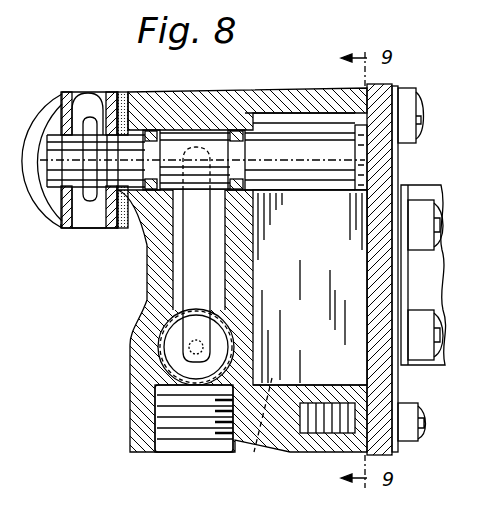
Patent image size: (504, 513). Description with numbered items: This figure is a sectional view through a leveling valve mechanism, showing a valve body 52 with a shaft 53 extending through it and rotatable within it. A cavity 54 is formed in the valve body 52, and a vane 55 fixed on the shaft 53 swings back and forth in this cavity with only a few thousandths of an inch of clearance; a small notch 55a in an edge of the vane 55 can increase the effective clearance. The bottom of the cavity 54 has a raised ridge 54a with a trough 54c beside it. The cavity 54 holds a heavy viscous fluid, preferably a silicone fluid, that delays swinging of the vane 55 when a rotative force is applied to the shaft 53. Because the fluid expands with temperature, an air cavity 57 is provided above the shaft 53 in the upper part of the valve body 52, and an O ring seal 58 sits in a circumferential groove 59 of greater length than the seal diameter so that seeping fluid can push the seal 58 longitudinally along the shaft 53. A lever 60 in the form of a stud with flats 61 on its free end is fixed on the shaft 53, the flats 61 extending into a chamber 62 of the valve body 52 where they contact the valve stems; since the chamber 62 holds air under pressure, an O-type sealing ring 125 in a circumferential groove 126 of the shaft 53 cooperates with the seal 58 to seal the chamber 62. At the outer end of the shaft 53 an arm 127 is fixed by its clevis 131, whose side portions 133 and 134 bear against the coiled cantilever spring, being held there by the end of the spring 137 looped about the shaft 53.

The valve body 52 is at (150, 298).
The shaft 53 is at (170, 130).
The cavity 54 is at (355, 271).
The raised ridge 54a is at (390, 381).
The trough 54c is at (259, 427).
The vane 55 is at (316, 266).
The notch 55a is at (305, 380).
The air cavity 57 is at (305, 118).
The O ring seal 58 is at (240, 130).
The circumferential groove 59 is at (226, 130).
The lever 60 is at (196, 274).
The flats 61 is at (186, 335).
The chamber 62 is at (176, 350).
The O-type sealing ring 125 is at (140, 205).
The circumferential groove 126 is at (150, 158).
The arm 127 is at (38, 96).
The clevis 131 is at (90, 232).
The side portion 133 is at (113, 92).
The side portion 134 is at (60, 226).
The end of the spring 137 is at (78, 231).